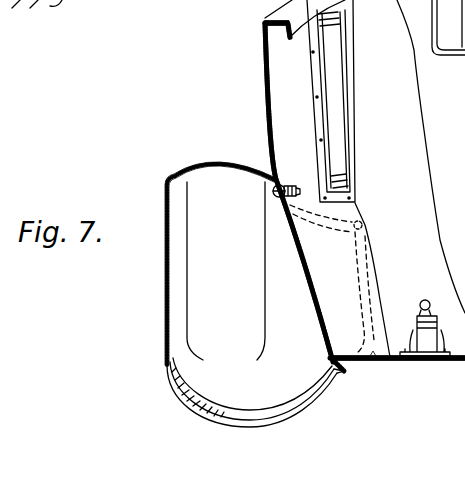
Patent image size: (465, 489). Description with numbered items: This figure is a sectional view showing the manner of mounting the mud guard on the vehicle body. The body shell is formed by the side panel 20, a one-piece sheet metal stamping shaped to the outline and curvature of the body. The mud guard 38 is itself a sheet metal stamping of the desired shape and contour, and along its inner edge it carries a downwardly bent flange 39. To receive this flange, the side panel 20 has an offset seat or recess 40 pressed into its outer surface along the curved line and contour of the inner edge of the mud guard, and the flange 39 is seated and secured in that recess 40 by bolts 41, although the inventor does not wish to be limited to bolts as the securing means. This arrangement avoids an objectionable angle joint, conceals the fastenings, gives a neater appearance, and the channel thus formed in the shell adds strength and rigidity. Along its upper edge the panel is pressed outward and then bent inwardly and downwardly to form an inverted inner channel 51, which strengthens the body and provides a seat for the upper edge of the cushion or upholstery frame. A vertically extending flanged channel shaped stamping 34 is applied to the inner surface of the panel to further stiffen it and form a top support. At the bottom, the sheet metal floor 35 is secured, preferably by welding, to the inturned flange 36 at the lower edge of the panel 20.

The side panel 20 is at (263, 85).
The inverted inner channel 51 is at (273, 40).
The flanged channel shaped stamping 34 is at (342, 110).
The mud guard 38 is at (212, 163).
The downwardly bent flange 39 is at (279, 200).
The offset seat or recess 40 is at (282, 183).
The bolt 41 is at (289, 190).
The inturned flange 36 is at (335, 377).
The floor 35 is at (410, 362).